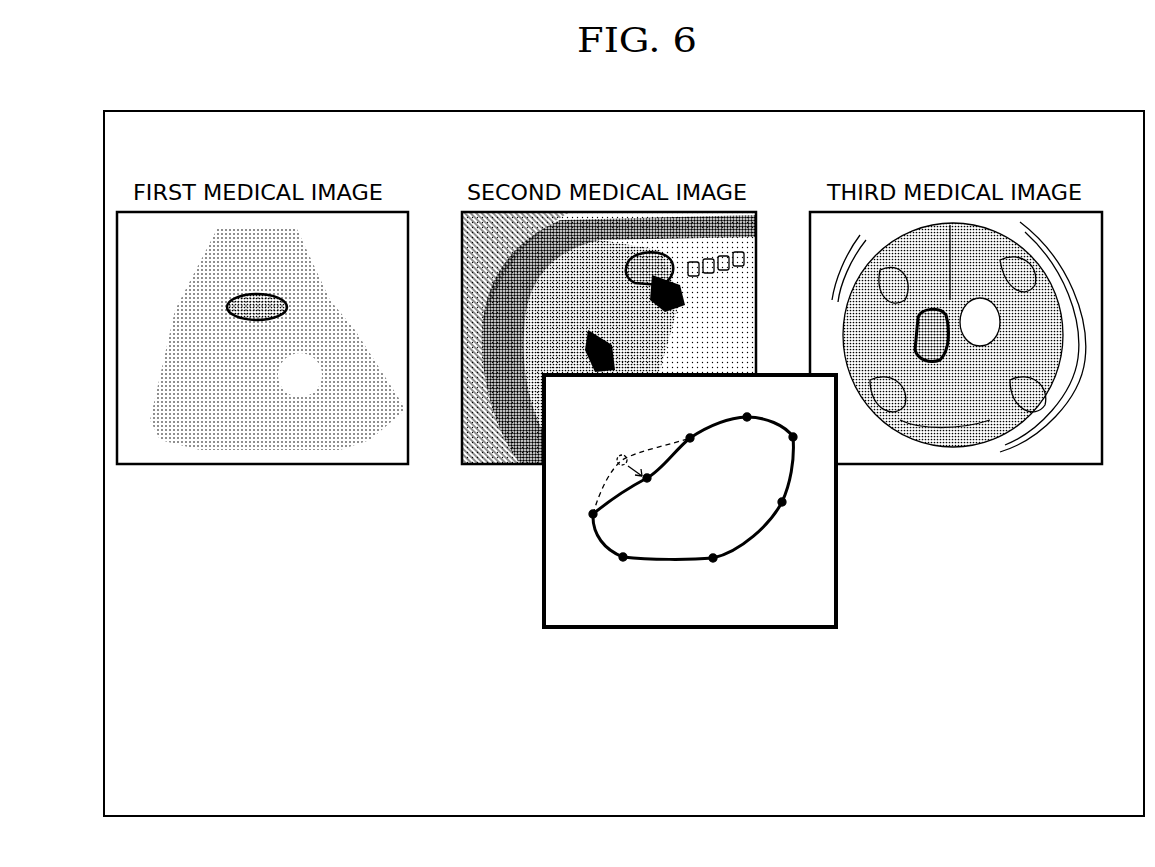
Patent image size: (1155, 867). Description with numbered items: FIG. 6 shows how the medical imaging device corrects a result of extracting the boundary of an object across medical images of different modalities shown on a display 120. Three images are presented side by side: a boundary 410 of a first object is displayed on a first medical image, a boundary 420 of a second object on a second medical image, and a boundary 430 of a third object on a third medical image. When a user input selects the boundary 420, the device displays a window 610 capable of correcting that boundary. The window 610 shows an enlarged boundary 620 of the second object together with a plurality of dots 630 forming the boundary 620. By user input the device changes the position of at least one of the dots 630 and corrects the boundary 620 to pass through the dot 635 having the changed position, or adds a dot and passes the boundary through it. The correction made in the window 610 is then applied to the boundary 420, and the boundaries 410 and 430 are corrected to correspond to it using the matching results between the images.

The display 120 is at (1048, 110).
The boundary of a first object 410 is at (242, 322).
The boundary of a second object 420 is at (673, 262).
The boundary of a third object 430 is at (938, 360).
The window 610 is at (836, 596).
The enlarged boundary of the second object 620 is at (788, 478).
The plurality of dots 630 is at (623, 561).
The dot having the changed position 635 is at (647, 482).